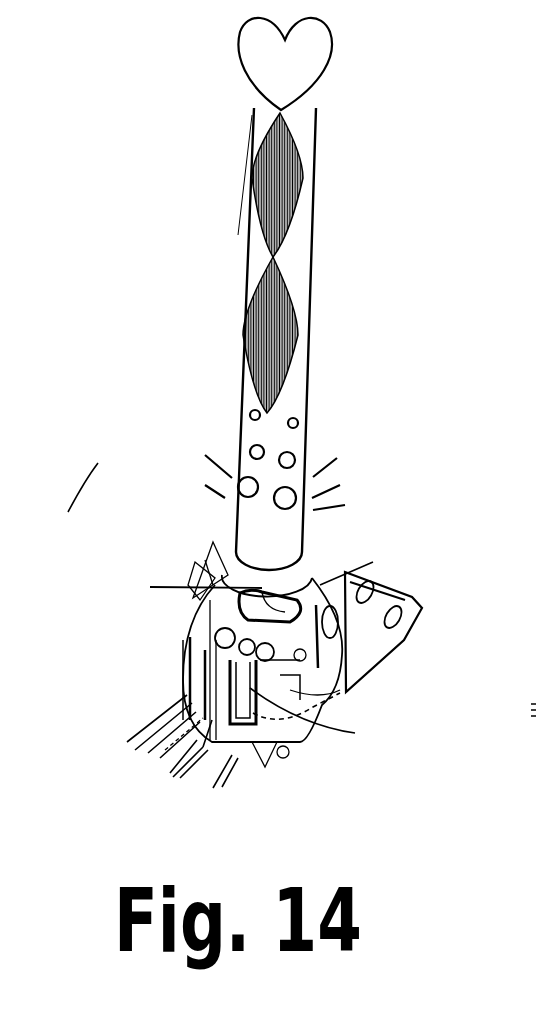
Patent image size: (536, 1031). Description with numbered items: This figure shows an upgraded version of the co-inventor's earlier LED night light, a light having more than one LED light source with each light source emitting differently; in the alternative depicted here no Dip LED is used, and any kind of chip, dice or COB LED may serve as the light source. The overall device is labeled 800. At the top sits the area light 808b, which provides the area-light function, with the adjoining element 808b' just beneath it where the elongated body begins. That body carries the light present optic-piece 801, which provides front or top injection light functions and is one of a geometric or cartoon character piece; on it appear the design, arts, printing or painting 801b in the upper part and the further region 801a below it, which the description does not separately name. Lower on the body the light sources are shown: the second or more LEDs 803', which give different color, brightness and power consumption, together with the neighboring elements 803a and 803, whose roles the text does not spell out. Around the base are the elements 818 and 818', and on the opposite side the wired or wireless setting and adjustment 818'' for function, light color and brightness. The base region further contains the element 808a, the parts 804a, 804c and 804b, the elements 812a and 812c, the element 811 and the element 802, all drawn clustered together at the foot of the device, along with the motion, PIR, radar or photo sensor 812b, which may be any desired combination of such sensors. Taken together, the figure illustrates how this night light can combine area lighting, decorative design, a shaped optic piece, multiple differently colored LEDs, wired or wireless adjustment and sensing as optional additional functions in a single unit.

The light-up toy device 800 is at (162, 285).
The area light 808b is at (316, 64).
The tube neck connection 808b' is at (222, 179).
The light present optic-piece 801 is at (282, 405).
The design, arts, printing, painting 801b is at (303, 190).
The lower light diffuser 801a is at (290, 250).
The LEDs 803a is at (250, 450).
The second or more LEDs 803' is at (154, 583).
The LED socket 803 is at (222, 598).
The connector 818 is at (164, 561).
The connector pin 818' is at (206, 557).
The wired or wireless setting and adjustment 818'' is at (361, 594).
The USB plug 808a is at (375, 570).
The housing part 804a is at (340, 693).
The USB port 812a is at (350, 733).
The housing part 804c is at (190, 633).
The circuit board 812c is at (193, 667).
The wires 811 is at (130, 724).
The housing part 804b is at (172, 766).
The base housing 802 is at (280, 745).
The motion, PIR, radar or photo sensor 812b is at (217, 780).